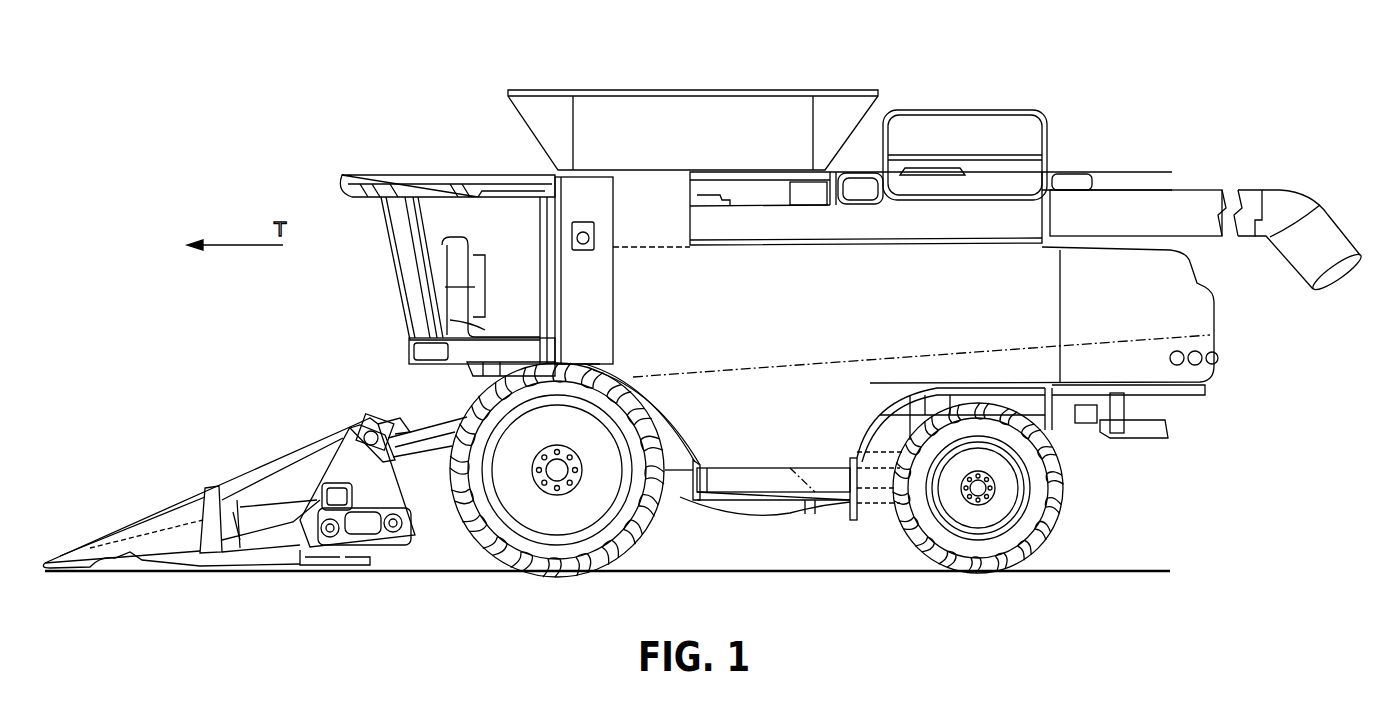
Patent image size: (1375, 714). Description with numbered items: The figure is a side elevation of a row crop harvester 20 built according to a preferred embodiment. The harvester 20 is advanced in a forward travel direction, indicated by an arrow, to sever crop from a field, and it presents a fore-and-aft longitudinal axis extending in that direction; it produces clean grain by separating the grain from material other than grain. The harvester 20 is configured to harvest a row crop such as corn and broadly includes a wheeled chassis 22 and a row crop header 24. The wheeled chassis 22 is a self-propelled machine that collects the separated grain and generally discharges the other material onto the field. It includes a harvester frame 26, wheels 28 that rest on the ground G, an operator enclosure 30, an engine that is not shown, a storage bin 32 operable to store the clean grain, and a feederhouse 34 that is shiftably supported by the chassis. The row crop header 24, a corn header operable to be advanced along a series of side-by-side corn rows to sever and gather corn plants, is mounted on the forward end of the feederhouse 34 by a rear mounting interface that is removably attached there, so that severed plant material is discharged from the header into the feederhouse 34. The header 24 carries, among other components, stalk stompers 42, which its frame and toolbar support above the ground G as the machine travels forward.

The crop harvester 20 is at (1098, 90).
The wheeled chassis 22 is at (845, 512).
The row crop header 24 is at (258, 482).
The harvester frame 26 is at (683, 478).
The wheels 28 is at (530, 560).
The operator enclosure 30 is at (408, 185).
The storage bin 32 is at (755, 118).
The feederhouse 34 is at (430, 437).
The stalk stompers 42 is at (315, 560).
The ground G is at (1125, 567).